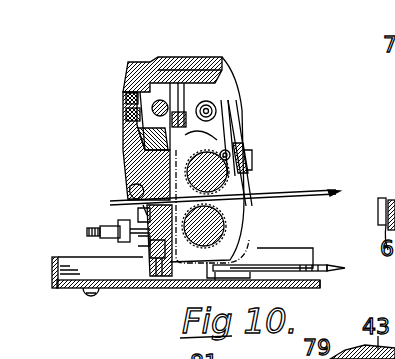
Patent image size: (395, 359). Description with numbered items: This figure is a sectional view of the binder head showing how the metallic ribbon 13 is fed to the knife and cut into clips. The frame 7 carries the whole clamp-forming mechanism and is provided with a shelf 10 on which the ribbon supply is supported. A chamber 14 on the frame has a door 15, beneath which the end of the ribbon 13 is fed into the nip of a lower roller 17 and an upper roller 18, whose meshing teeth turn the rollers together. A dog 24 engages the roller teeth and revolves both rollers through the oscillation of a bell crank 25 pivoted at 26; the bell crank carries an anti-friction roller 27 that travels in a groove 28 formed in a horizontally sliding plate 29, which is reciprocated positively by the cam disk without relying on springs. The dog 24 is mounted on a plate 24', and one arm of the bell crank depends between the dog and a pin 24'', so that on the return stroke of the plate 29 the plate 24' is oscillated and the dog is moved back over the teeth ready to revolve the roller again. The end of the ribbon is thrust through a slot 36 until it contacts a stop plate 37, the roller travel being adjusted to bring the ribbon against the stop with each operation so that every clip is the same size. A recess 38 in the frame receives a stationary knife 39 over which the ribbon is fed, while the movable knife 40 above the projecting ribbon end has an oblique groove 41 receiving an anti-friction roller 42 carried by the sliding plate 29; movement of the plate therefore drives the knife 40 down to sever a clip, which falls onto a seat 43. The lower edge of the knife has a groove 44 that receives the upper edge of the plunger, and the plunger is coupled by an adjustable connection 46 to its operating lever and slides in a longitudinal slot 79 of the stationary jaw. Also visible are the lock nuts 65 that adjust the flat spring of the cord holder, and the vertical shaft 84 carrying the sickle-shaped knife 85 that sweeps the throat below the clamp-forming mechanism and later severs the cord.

The frame 7 is at (207, 57).
The shelf 10 is at (57, 284).
The metallic ribbon 13 is at (332, 193).
The chamber 14 is at (262, 240).
The door 15 is at (250, 160).
The lower roller 17 is at (226, 226).
The upper roller 18 is at (213, 173).
The dog 24 is at (266, 153).
The plate 24' is at (254, 118).
The pin 24'' is at (290, 126).
The bell crank 25 is at (217, 140).
The pivot 26 is at (209, 108).
The anti-friction roller 27 is at (181, 125).
The groove 28 is at (182, 116).
The plate 29 is at (157, 98).
The slot 36 is at (132, 190).
The stop plate 37 is at (140, 208).
The recess 38 is at (165, 263).
The stationary knife 39 is at (150, 265).
The movable knife 40 is at (146, 150).
The groove 41 is at (127, 97).
The anti-friction roller 42 is at (128, 117).
The seat 43 is at (150, 208).
The groove 44 is at (133, 198).
The adjustable connection 46 is at (148, 205).
The lock nuts 65 is at (380, 208).
The longitudinal slot 79 is at (155, 238).
The vertical shaft 84 is at (223, 280).
The sickle-shaped knife 85 is at (313, 267).